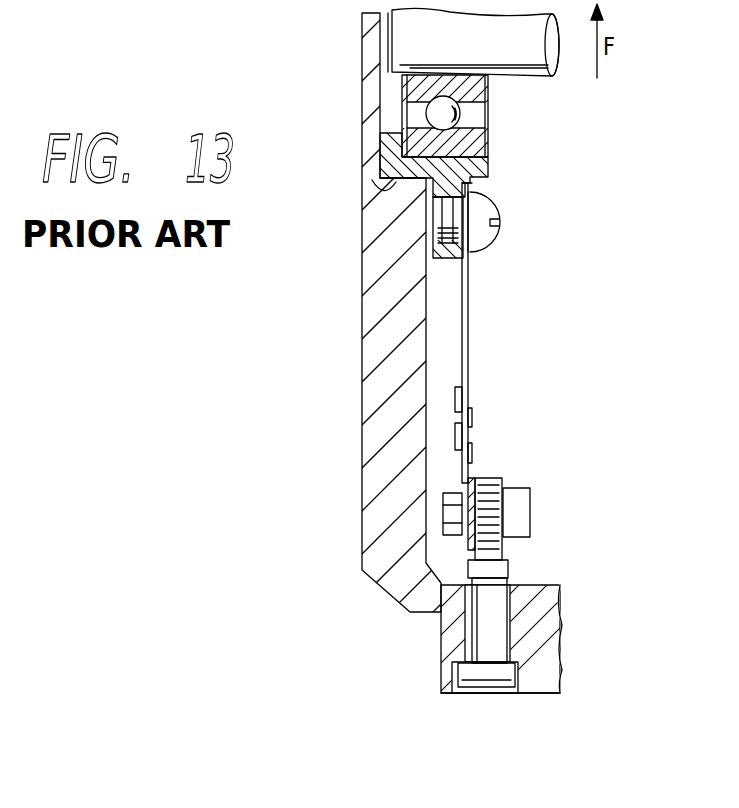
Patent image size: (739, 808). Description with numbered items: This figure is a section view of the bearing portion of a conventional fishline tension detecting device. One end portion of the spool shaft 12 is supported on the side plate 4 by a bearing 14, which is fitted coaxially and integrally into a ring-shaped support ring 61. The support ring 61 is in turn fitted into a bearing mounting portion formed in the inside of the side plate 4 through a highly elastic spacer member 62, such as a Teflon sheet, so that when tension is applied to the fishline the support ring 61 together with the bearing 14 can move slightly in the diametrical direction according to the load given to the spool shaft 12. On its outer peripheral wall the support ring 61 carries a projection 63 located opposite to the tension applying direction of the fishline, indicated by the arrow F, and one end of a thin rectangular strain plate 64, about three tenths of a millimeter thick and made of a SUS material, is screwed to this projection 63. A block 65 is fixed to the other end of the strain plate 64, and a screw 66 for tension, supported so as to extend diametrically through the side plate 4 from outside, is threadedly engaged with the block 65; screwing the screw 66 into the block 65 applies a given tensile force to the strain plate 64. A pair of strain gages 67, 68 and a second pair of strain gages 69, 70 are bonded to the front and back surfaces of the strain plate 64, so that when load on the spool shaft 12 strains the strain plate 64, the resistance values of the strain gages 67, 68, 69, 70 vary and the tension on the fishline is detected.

The side plate 4 is at (383, 296).
The spool shaft 12 is at (410, 40).
The bearing 14 is at (488, 95).
The support ring 61 is at (488, 170).
The spacer member 62 is at (380, 196).
The projection 63 is at (468, 258).
The strain plate 64 is at (470, 338).
The block 65 is at (518, 520).
The screw for tension 66 is at (510, 570).
The strain gage 67 is at (472, 418).
The strain gage 68 is at (472, 453).
The strain gage 69 is at (455, 403).
The strain gage 70 is at (455, 447).